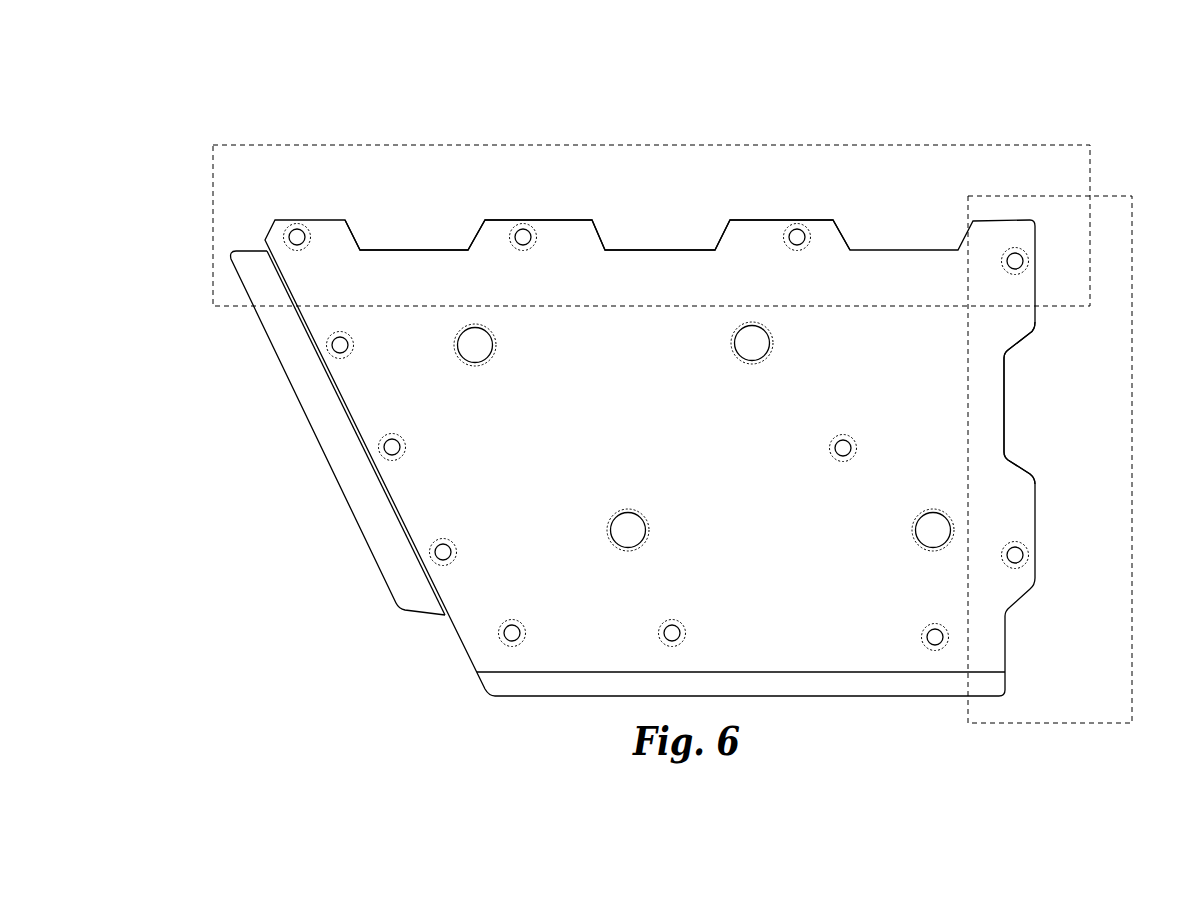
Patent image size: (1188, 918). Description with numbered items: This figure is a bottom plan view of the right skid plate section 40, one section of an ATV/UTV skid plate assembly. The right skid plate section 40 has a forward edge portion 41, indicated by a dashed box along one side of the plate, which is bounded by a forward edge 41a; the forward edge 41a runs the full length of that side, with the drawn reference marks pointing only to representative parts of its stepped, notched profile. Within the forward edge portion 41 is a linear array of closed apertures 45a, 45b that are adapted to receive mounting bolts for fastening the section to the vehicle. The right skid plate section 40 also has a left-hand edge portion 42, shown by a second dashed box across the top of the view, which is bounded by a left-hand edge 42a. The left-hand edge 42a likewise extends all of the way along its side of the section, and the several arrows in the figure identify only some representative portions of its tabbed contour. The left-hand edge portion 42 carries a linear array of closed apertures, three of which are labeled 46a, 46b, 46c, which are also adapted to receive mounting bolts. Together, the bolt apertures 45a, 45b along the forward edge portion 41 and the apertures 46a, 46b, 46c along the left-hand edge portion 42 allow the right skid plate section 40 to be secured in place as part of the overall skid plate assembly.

The right skid plate section 40 is at (233, 85).
The forward edge portion 41 is at (1132, 232).
The forward edge 41a is at (1025, 342).
The left-hand edge portion 42 is at (990, 145).
The left-hand edge 42a is at (770, 220).
The closed aperture 45a is at (1015, 261).
The closed aperture 45b is at (1015, 555).
The closed aperture 46a is at (797, 245).
The closed aperture 46b is at (523, 245).
The closed aperture 46c is at (297, 245).